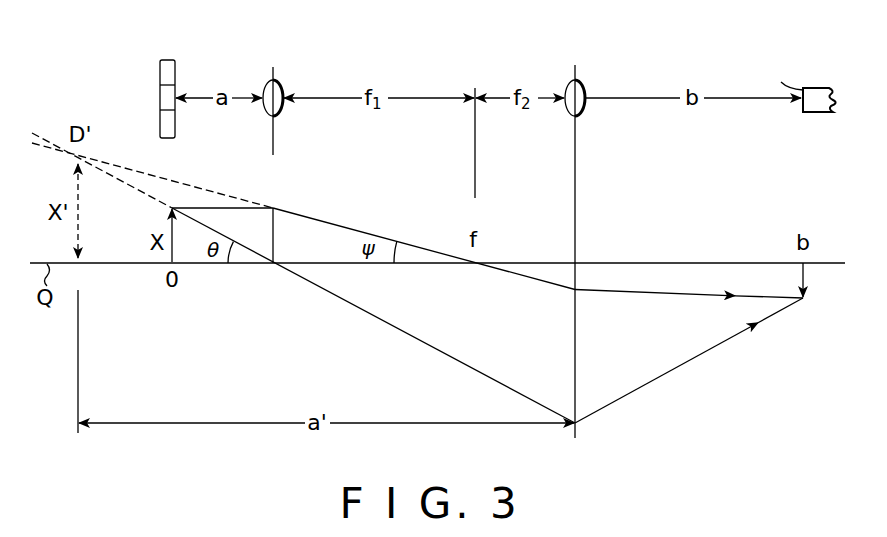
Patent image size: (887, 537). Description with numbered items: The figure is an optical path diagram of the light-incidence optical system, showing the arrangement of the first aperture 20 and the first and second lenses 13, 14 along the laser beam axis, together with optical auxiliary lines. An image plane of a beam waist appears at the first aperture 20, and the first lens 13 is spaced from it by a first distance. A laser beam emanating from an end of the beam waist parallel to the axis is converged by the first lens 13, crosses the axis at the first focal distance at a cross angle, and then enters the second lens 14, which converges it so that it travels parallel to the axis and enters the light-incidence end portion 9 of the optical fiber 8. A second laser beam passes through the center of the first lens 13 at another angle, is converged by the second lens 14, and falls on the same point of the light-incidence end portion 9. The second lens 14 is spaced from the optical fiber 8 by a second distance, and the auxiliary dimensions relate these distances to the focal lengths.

The first aperture 20 is at (165, 58).
The first lens 13 is at (283, 110).
The second lens 14 is at (587, 111).
The optical fiber 8 is at (822, 87).
The light-incidence end portion 9 is at (781, 82).